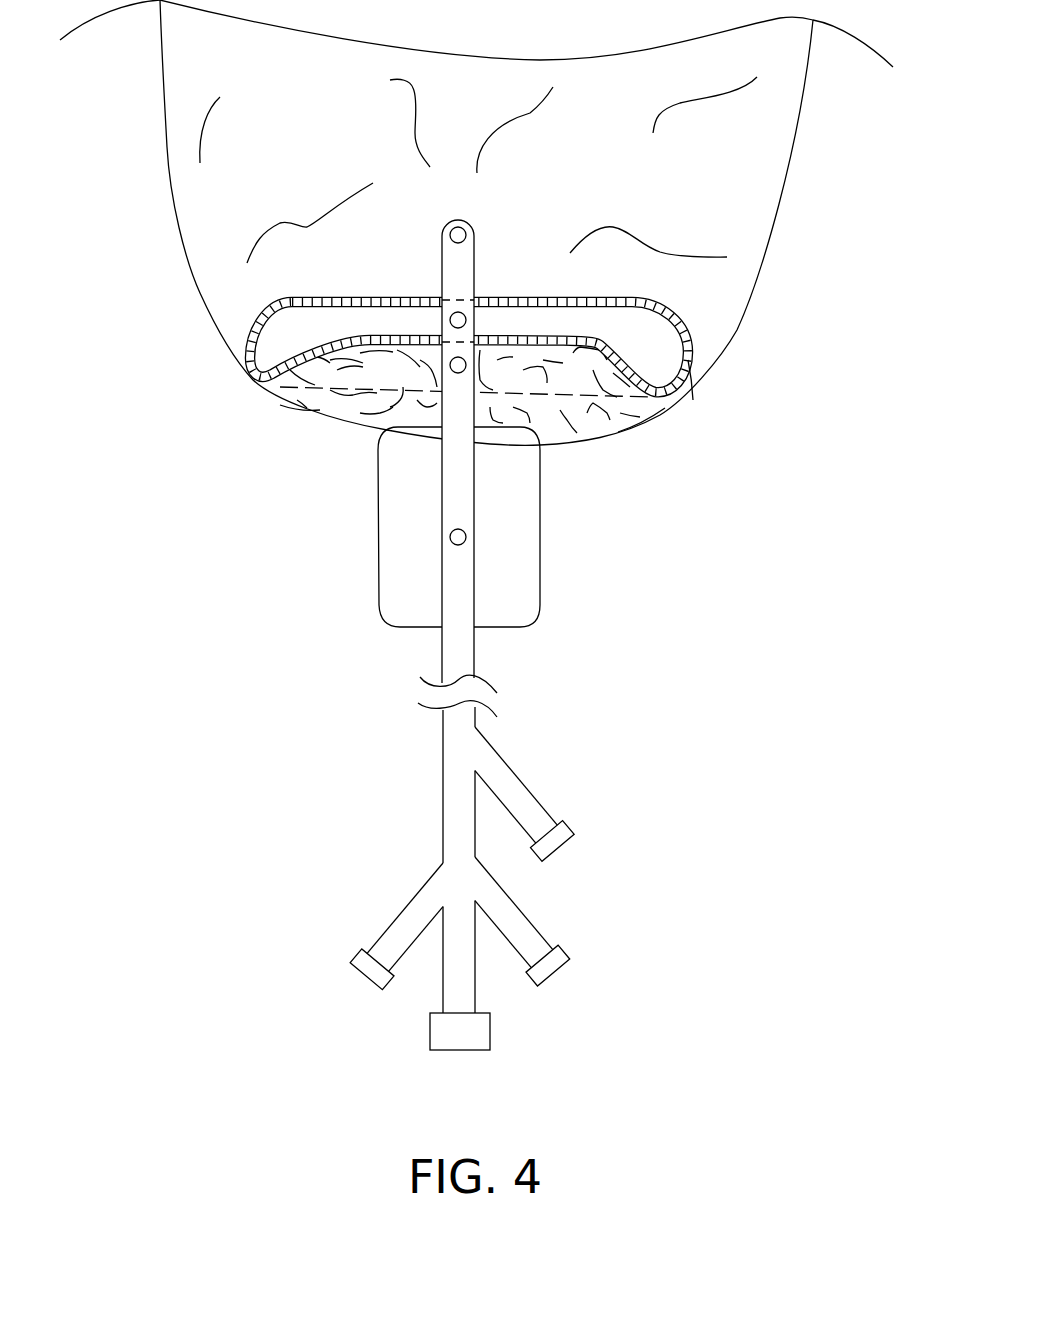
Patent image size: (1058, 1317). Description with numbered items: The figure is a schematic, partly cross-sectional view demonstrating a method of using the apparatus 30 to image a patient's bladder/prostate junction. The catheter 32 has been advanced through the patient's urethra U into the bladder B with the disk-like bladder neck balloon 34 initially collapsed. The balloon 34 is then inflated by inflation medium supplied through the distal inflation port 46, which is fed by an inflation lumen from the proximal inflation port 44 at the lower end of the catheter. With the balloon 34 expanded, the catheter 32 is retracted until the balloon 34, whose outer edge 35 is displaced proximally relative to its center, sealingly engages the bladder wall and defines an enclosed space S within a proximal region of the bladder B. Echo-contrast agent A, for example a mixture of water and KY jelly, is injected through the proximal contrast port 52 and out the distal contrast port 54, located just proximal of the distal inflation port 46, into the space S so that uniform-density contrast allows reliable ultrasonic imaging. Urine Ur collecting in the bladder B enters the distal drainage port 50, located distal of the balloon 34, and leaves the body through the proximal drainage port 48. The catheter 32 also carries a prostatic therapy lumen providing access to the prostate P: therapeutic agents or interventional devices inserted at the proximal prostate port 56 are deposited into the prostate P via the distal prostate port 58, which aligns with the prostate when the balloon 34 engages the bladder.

The apparatus 30 is at (472, 832).
The catheter 32 is at (447, 760).
The bladder neck balloon 34 is at (260, 362).
The outer edge 35 is at (692, 400).
The proximal inflation port 44 is at (553, 843).
The distal inflation port 46 is at (467, 320).
The proximal drainage port 48 is at (482, 1033).
The distal drainage port 50 is at (467, 234).
The proximal contrast port 52 is at (377, 977).
The distal contrast port 54 is at (449, 365).
The proximal prostate port 56 is at (553, 973).
The distal prostate port 58 is at (449, 537).
The bladder B is at (163, 147).
The urine Ur is at (588, 160).
The enclosed space S is at (374, 421).
The echo-contrast agent A is at (618, 432).
The prostate P is at (530, 490).
The urethra U is at (437, 647).